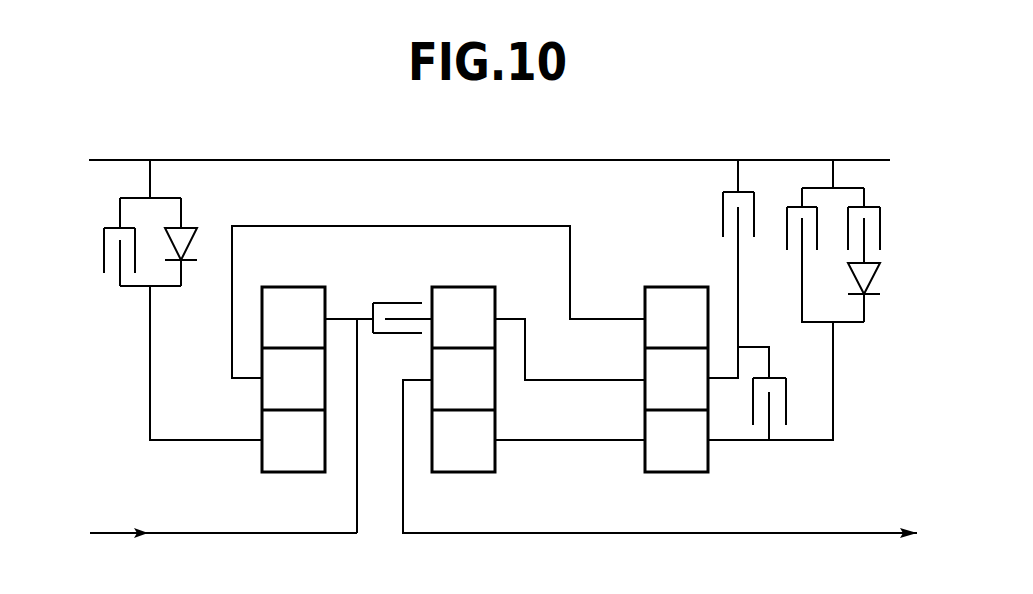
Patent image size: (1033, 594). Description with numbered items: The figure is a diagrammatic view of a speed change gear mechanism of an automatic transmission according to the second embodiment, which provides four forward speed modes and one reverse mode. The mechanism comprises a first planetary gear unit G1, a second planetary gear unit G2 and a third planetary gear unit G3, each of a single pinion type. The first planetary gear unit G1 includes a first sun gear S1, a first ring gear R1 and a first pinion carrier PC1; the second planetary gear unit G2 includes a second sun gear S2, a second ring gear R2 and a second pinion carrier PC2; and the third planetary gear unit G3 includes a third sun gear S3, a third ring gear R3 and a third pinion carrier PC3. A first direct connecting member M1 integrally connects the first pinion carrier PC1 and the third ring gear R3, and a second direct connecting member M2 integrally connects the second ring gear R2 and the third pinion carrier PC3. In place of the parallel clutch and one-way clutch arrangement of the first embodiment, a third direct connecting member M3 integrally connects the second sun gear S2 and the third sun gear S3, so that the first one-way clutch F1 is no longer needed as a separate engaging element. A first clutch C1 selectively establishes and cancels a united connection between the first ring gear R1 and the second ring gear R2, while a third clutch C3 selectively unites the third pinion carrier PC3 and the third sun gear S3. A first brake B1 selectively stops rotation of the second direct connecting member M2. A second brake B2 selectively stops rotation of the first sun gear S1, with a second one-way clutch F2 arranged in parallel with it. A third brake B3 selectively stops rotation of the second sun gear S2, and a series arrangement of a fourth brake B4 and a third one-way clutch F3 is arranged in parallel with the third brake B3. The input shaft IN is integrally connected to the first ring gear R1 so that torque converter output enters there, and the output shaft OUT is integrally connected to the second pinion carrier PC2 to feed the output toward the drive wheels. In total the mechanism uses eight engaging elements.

The first brake B1 is at (726, 269).
The second brake B2 is at (171, 300).
The third brake B3 is at (817, 245).
The fourth brake B4 is at (881, 225).
The first one-way clutch F1 is at (660, 456).
The second one-way clutch F2 is at (192, 242).
The third one-way clutch F3 is at (881, 292).
The first clutch C1 is at (378, 404).
The third clutch C3 is at (770, 395).
The first planetary gear unit G1 is at (293, 351).
The second planetary gear unit G2 is at (467, 351).
The third planetary gear unit G3 is at (677, 351).
The first direct connecting member M1 is at (428, 226).
The second direct connecting member M2 is at (500, 318).
The third direct connecting member M3 is at (548, 440).
The first ring gear R1 is at (293, 319).
The first pinion carrier PC1 is at (293, 378).
The first sun gear S1 is at (292, 440).
The second ring gear R2 is at (463, 319).
The second pinion carrier PC2 is at (463, 378).
The second sun gear S2 is at (462, 440).
The third ring gear R3 is at (676, 319).
The third pinion carrier PC3 is at (676, 378).
The third sun gear S3 is at (675, 440).
The input shaft IN is at (182, 533).
The output shaft OUT is at (861, 533).